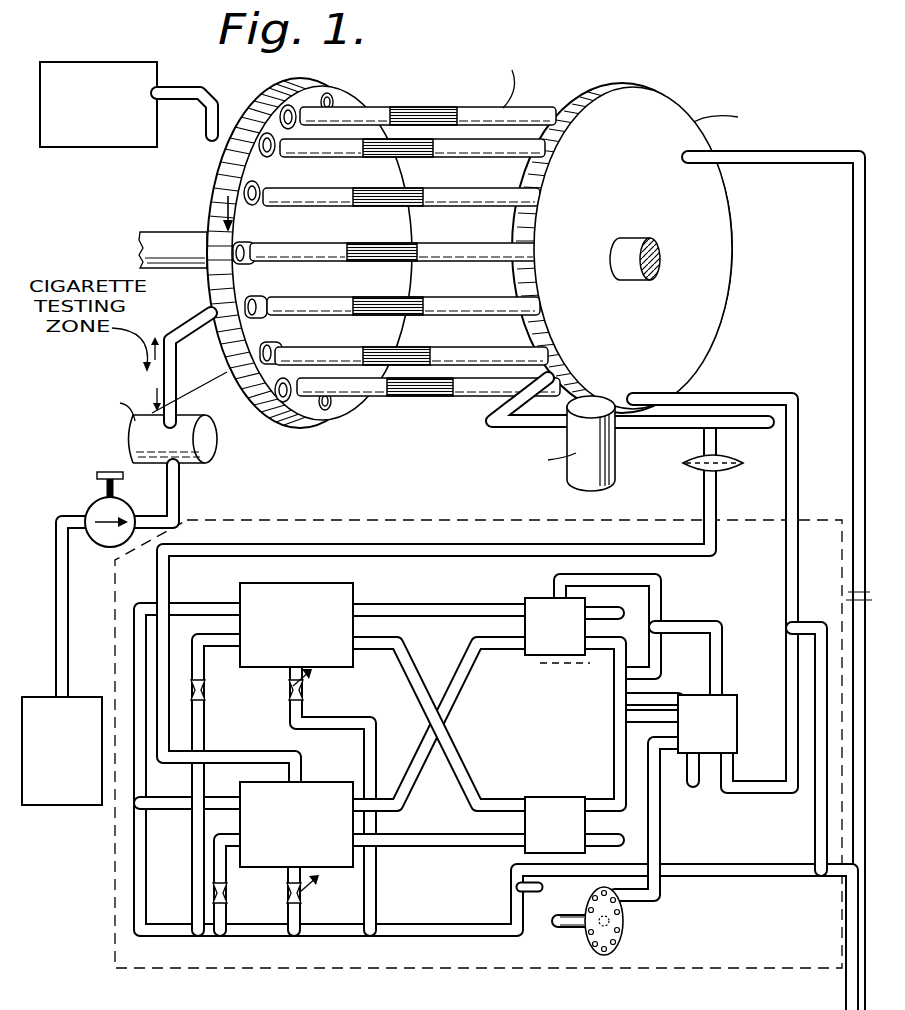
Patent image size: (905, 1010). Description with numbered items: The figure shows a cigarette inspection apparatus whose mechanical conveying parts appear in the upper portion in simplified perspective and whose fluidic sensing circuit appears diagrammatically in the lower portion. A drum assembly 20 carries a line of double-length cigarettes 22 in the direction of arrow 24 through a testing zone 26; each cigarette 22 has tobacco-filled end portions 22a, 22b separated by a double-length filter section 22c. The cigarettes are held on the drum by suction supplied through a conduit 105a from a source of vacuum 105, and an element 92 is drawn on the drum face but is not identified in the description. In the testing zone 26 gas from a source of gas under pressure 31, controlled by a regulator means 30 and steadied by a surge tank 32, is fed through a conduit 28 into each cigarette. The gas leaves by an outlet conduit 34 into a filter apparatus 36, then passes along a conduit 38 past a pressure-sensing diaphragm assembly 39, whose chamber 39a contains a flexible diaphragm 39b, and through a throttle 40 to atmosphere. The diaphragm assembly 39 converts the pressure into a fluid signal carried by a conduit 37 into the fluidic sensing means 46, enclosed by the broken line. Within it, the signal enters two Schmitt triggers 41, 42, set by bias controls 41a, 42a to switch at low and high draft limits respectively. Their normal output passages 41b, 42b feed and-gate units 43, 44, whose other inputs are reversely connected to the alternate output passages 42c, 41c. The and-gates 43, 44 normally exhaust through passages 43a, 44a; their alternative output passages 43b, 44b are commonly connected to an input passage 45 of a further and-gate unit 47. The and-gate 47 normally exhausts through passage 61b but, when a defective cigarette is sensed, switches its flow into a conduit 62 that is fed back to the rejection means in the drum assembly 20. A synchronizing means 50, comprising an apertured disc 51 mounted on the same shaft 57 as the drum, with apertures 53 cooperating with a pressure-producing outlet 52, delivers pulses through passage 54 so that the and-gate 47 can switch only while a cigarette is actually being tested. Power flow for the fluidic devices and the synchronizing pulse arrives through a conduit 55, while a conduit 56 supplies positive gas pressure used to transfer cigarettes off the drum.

The source of vacuum 105 is at (90, 62).
The conduit 105a is at (193, 90).
The drum assembly 20 is at (694, 91).
The cigarette 22 is at (478, 306).
The tobacco-filled end portion 22a is at (362, 109).
The tobacco-filled end portion 22b is at (528, 115).
The double-length filter section 22c is at (441, 109).
The arrow 24 is at (212, 207).
The cigarette holder 92 is at (256, 294).
The testing zone 26 is at (150, 374).
The conduit 28 is at (186, 326).
The regulator means 30 is at (98, 505).
The source of gas under pressure 31 is at (38, 697).
The surge tank 32 is at (208, 450).
The outlet conduit 34 is at (490, 423).
The filter apparatus 36 is at (579, 481).
The conduit 37 is at (455, 545).
The conduit 38 is at (670, 428).
The pressure-sensing diaphragm assembly 39 is at (676, 474).
The chamber 39a is at (726, 459).
The flexible diaphragm 39b is at (733, 469).
The throttle 40 is at (768, 415).
The Schmitt trigger 41 is at (355, 595).
The bias control 41a is at (290, 691).
The normal flow output passage 41b is at (442, 604).
The alternate output passage 41c is at (413, 682).
The Schmitt trigger 42 is at (329, 782).
The bias control 42a is at (302, 895).
The normal flow output passage 42b is at (441, 843).
The alternate output passage 42c is at (413, 781).
The and-gate unit 43 is at (525, 601).
The passage 43a is at (610, 610).
The alternative output passage 43b is at (542, 666).
The and-gate unit 44 is at (524, 799).
The passage 44a is at (612, 843).
The alternative output passage 44b is at (616, 741).
The input passage 45 is at (657, 692).
The fluidic sensing means 46 is at (365, 518).
The and-gate unit 47 is at (714, 694).
The synchronizing means 50 is at (646, 924).
The apertured disc 51 is at (622, 944).
The pressure-producing outlet 52 is at (537, 891).
The apertures 53 is at (623, 913).
The passage 54 is at (656, 892).
The conduit 55 is at (832, 874).
The conduit 56 is at (851, 247).
The shaft 57 is at (640, 238).
The exhaust passage 61b is at (690, 783).
The conduit 62 is at (786, 587).